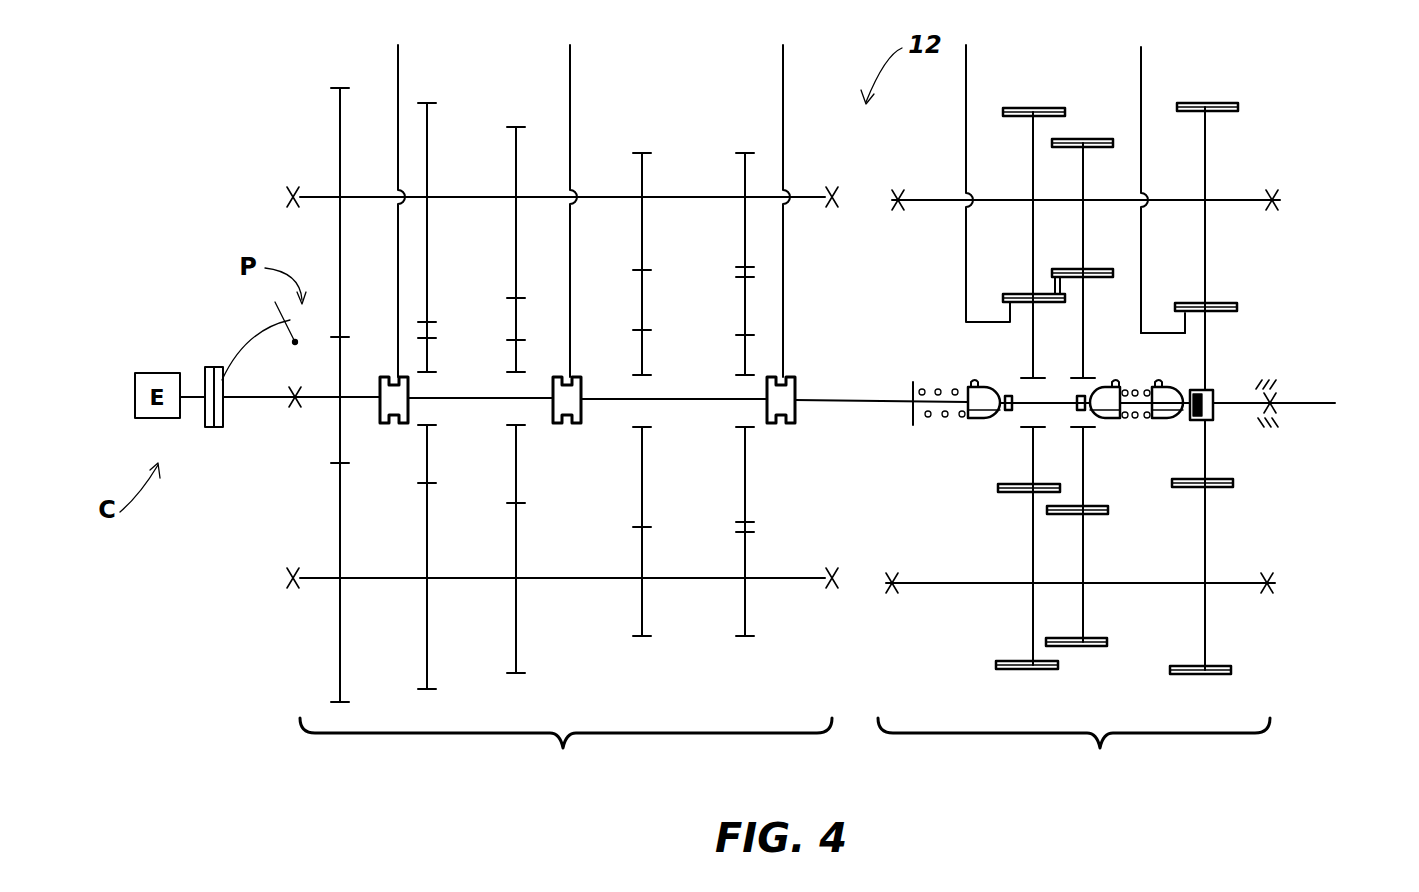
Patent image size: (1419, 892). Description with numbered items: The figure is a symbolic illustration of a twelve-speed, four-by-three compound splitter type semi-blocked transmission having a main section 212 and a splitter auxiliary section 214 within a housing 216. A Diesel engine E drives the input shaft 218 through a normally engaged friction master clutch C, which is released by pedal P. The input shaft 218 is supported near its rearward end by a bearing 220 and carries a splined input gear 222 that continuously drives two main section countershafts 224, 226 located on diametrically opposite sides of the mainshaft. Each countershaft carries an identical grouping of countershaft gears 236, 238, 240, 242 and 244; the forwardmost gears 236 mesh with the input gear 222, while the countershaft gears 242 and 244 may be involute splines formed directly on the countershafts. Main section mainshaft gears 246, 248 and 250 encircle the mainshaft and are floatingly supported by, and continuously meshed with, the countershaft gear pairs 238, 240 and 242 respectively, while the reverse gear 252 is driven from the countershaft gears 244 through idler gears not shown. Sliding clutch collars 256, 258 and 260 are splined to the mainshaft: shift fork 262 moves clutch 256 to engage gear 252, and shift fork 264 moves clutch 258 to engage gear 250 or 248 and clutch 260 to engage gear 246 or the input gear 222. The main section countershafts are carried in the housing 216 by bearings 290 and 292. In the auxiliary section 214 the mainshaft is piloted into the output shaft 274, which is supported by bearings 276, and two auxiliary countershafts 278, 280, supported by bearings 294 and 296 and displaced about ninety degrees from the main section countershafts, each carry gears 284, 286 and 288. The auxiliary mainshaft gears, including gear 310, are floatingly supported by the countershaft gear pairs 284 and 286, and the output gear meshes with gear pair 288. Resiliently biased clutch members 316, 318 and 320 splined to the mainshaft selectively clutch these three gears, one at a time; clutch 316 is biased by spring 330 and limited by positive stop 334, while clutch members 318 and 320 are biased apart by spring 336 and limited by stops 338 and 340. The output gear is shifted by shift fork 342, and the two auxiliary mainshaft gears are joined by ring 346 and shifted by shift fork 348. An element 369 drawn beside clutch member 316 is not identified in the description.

The first transmission section 212 is at (566, 754).
The splitter auxiliary section 214 is at (1074, 755).
The housing 216 is at (1278, 384).
The input shaft 218 is at (260, 400).
The bearing 220 is at (297, 412).
The input gear 222 is at (340, 368).
The main section countershaft 224 is at (467, 205).
The main section countershaft 226 is at (470, 576).
The countershaft gear 236 is at (340, 122).
The countershaft gear 238 is at (432, 124).
The countershaft gear 240 is at (516, 165).
The countershaft gear 242 is at (642, 183).
The countershaft gear 244 is at (745, 178).
The main section mainshaft drive gear 246 is at (430, 339).
The main section mainshaft gear 248 is at (507, 298).
The main section mainshaft gear 250 is at (642, 330).
The reverse gear 252 is at (744, 335).
The sliding clutch collar 256 is at (782, 423).
The sliding clutch collar 258 is at (563, 423).
The sliding clutch collar 260 is at (397, 423).
The shift fork 262 is at (783, 335).
The shift fork 264 is at (570, 283).
The output shaft 274 is at (1310, 403).
The bearings 276 is at (1275, 407).
The auxiliary section countershaft 278 is at (1088, 200).
The auxiliary section countershaft 280 is at (1102, 587).
The auxiliary countershaft gear 284 is at (1030, 185).
The auxiliary countershaft gear 286 is at (1083, 260).
The auxiliary countershaft gear 288 is at (1207, 145).
The bearing 290 is at (288, 188).
The bearing 292 is at (833, 188).
The bearing 294 is at (898, 212).
The bearing 296 is at (1278, 200).
The auxiliary section mainshaft gear 310 is at (1090, 300).
The resiliently biased clutch member 316 is at (968, 420).
The clutch member 318 is at (1100, 420).
The clutch member 320 is at (1165, 420).
The spring 330 is at (938, 386).
The positive stop 334 is at (1008, 414).
The spring 336 is at (1134, 385).
The stop 338 is at (1075, 396).
The stop 340 is at (1213, 405).
The shift fork 342 is at (1141, 272).
The ring 346 is at (1033, 288).
The shift fork 348 is at (970, 58).
The shift bar 369 is at (910, 388).